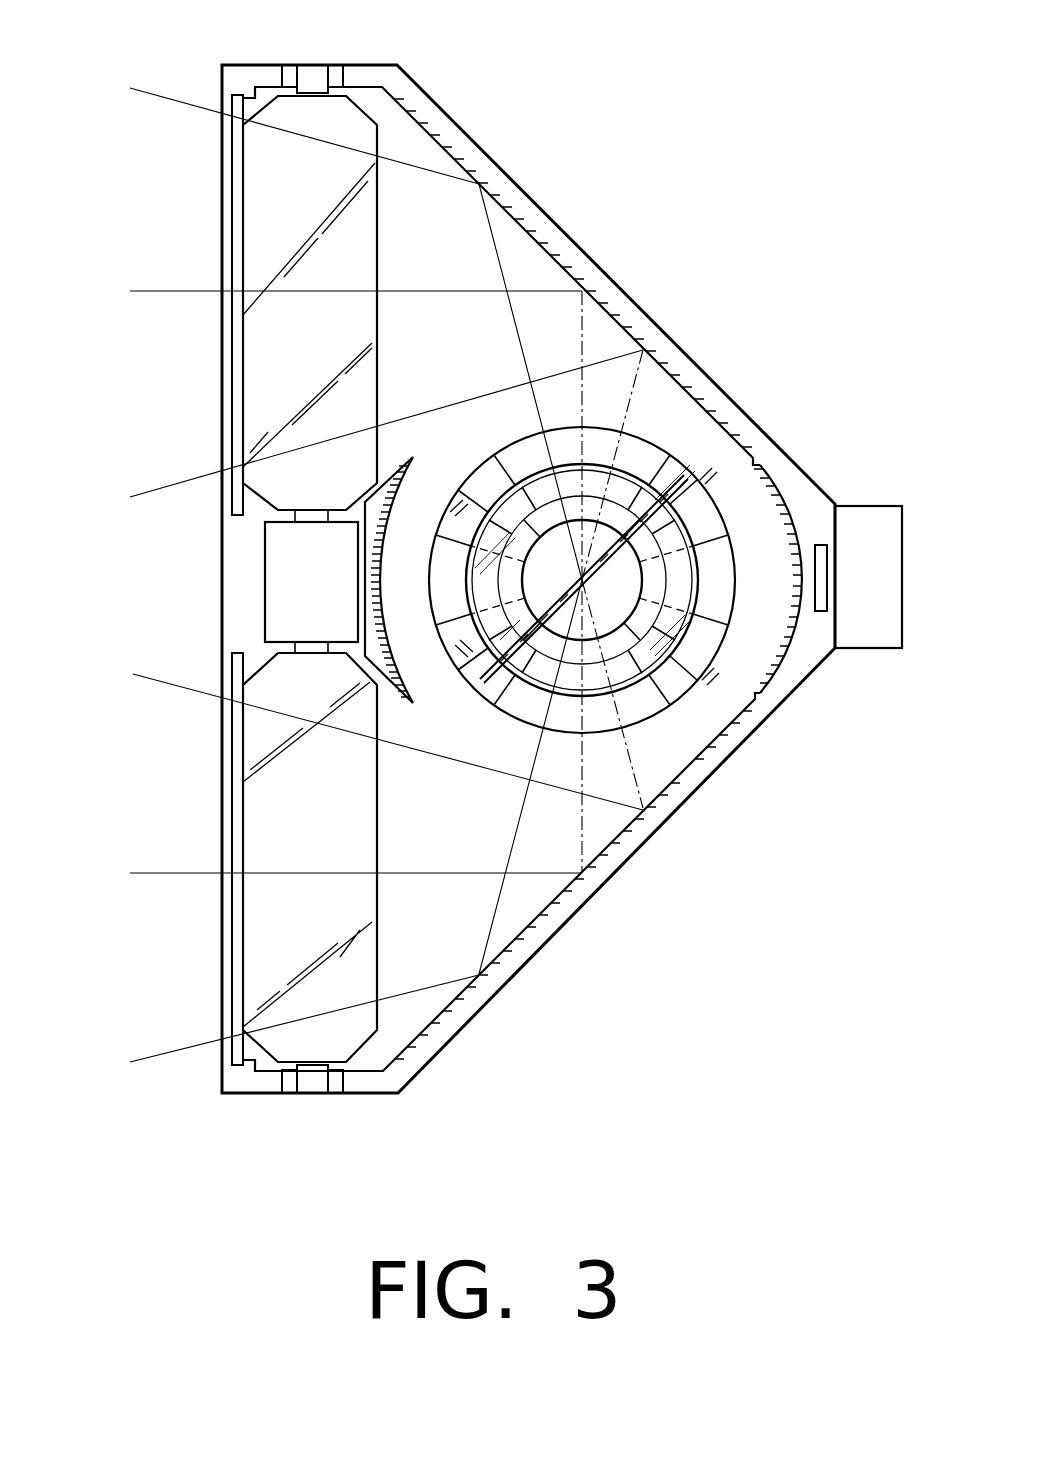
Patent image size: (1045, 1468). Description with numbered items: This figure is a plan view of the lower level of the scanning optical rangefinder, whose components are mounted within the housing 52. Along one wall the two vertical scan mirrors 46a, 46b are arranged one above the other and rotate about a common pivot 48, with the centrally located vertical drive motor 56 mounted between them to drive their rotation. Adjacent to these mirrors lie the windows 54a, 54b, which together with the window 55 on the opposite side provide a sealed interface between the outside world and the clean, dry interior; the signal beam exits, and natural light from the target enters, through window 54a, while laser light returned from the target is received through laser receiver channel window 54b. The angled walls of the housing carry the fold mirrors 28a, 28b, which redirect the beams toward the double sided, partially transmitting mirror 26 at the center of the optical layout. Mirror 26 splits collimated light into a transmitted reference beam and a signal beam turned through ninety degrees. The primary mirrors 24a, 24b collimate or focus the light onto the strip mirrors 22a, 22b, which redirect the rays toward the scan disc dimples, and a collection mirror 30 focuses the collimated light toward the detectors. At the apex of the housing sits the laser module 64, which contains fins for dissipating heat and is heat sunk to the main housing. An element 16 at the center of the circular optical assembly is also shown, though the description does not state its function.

The optical fiber core 16 is at (637, 626).
The strip mirror 22a is at (677, 668).
The strip mirror 22b is at (515, 470).
The primary mirror 24a is at (786, 512).
The primary mirror 24b is at (440, 712).
The double sided partially transmitting mirror 26 is at (622, 526).
The fold mirror 28a is at (553, 916).
The fold mirror 28b is at (574, 262).
The collection mirror 30 is at (448, 508).
The vertical scan mirror 46a is at (379, 845).
The vertical scan mirror 46b is at (390, 240).
The pivot 48 is at (308, 73).
The housing 52 is at (665, 806).
The window 54a is at (231, 950).
The laser receiver channel window 54b is at (230, 258).
The window 55 is at (827, 587).
The vertical drive motor 56 is at (265, 546).
The laser module 64 is at (902, 540).